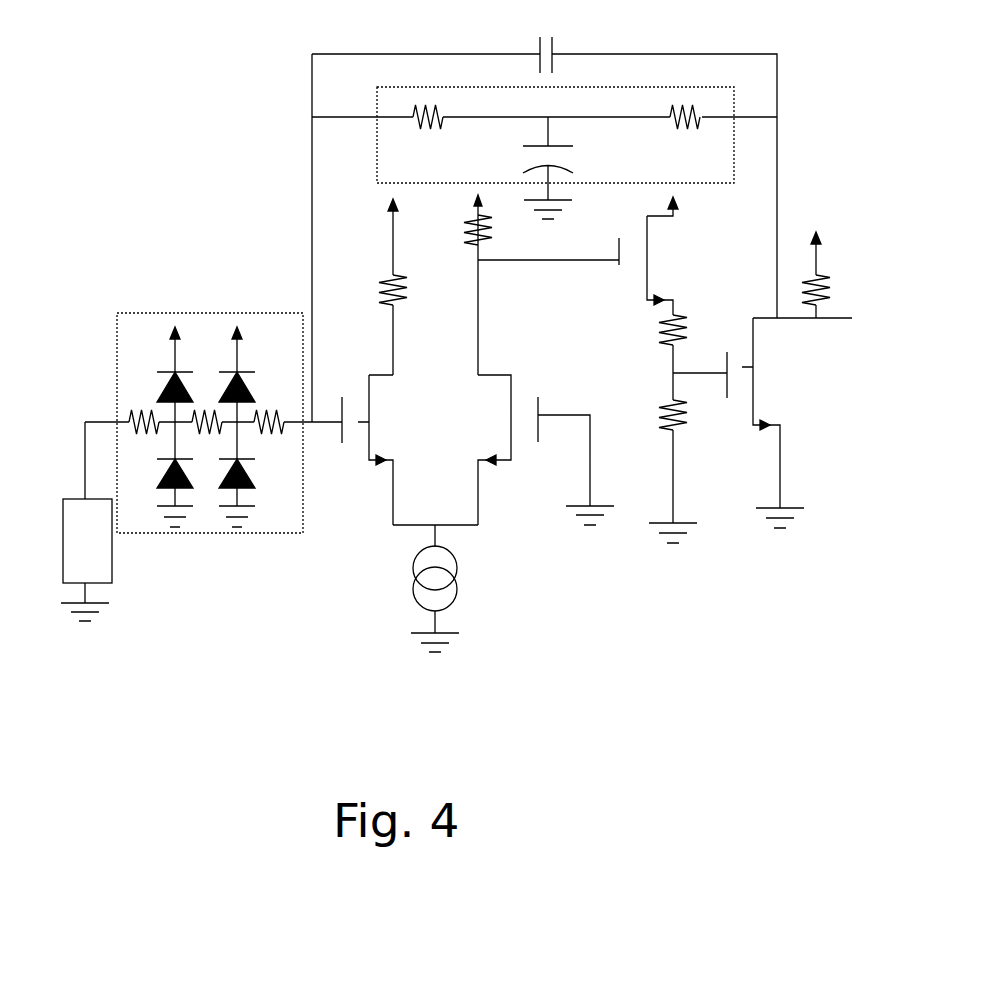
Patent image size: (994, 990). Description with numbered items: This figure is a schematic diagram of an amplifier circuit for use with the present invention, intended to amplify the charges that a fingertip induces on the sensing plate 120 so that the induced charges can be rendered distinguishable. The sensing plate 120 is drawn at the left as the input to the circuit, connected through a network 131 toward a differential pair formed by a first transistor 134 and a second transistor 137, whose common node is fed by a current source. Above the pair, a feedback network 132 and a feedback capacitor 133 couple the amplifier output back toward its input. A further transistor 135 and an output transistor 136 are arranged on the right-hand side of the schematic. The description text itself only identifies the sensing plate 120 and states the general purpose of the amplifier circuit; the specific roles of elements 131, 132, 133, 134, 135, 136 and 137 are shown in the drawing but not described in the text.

The sensing plate 120 is at (97, 554).
The diode clamp network 131 is at (153, 342).
The feedback resistor network 132 is at (423, 103).
The feedback capacitor 133 is at (537, 50).
The first transistor of differential pair 134 is at (372, 420).
The bias transistor 135 is at (630, 263).
The output transistor 136 is at (753, 367).
The second transistor of differential pair 137 is at (520, 438).